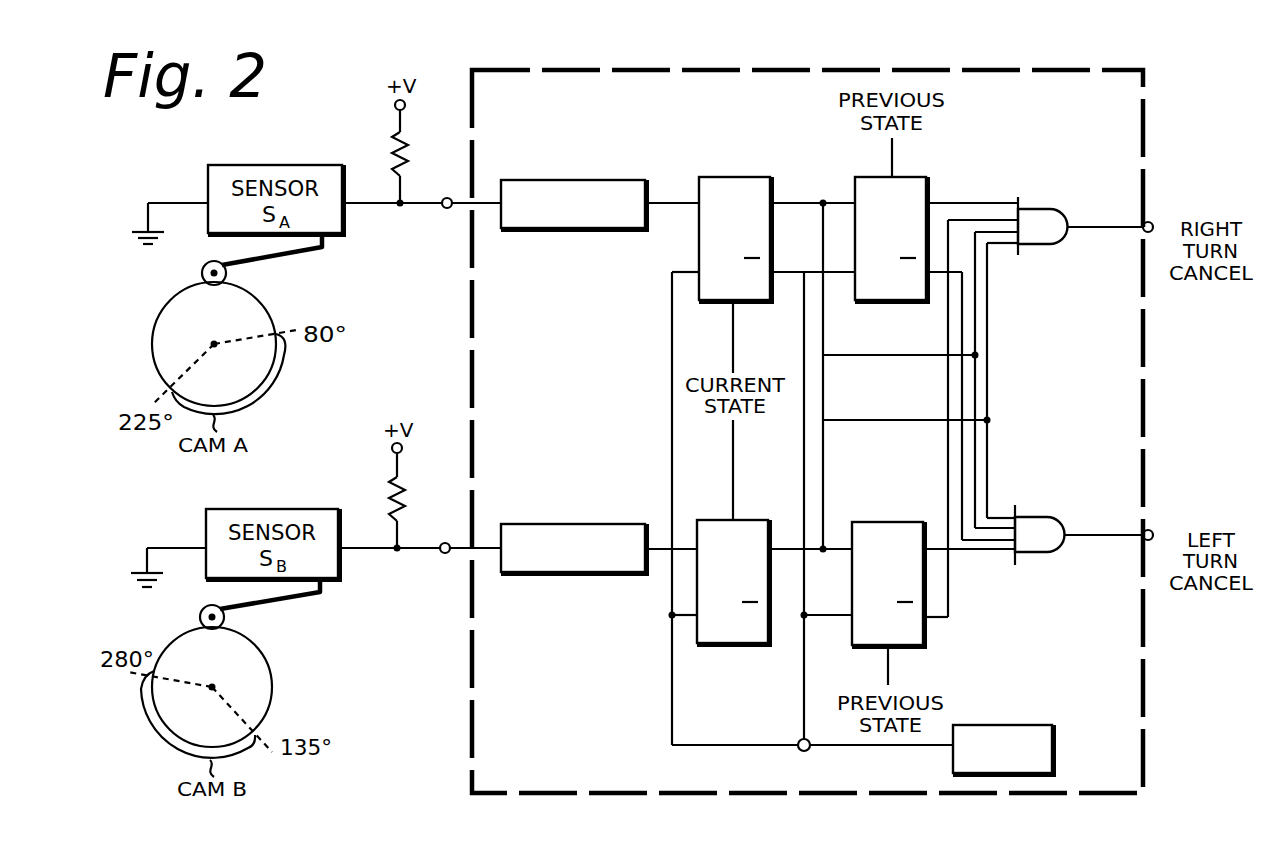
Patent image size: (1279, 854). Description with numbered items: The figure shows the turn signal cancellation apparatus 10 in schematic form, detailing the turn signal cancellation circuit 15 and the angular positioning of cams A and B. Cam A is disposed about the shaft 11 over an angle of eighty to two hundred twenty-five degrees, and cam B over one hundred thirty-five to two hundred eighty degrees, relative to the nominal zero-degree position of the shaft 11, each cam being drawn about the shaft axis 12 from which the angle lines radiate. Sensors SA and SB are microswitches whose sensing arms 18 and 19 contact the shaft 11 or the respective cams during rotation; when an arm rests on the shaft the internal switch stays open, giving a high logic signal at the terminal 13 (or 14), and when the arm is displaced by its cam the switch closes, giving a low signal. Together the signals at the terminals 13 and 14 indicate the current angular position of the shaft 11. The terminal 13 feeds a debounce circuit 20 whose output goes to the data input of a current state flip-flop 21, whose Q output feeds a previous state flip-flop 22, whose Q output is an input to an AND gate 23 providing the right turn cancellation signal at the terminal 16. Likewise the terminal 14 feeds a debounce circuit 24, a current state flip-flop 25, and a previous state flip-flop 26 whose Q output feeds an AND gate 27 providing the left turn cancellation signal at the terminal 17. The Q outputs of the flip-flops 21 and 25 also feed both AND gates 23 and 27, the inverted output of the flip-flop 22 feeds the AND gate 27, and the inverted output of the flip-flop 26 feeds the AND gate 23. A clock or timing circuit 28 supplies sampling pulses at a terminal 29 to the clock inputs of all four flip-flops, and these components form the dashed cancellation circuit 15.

The turn signal cancellation apparatus 10 is at (331, 121).
The shaft 11 is at (190, 310).
The cam shaft / axis of rotation 12 is at (212, 343).
The terminal 13 is at (442, 208).
The terminal 14 is at (441, 553).
The turn signal cancellation circuit 15 is at (1146, 128).
The terminal 16 is at (1143, 229).
The terminal 17 is at (1143, 537).
The sensing arm 18 is at (265, 256).
The sensing arm 19 is at (283, 598).
The debounce circuit 20 is at (587, 180).
The current state flip-flop 21 is at (747, 177).
The previous state flip-flop 22 is at (910, 177).
The AND gate 23 is at (1035, 245).
The debounce circuit 24 is at (587, 524).
The current state flip-flop 25 is at (747, 520).
The previous state flip-flop 26 is at (888, 522).
The AND gate 27 is at (1043, 517).
The clock or timing circuit 28 is at (1015, 725).
The terminal 29 is at (799, 739).